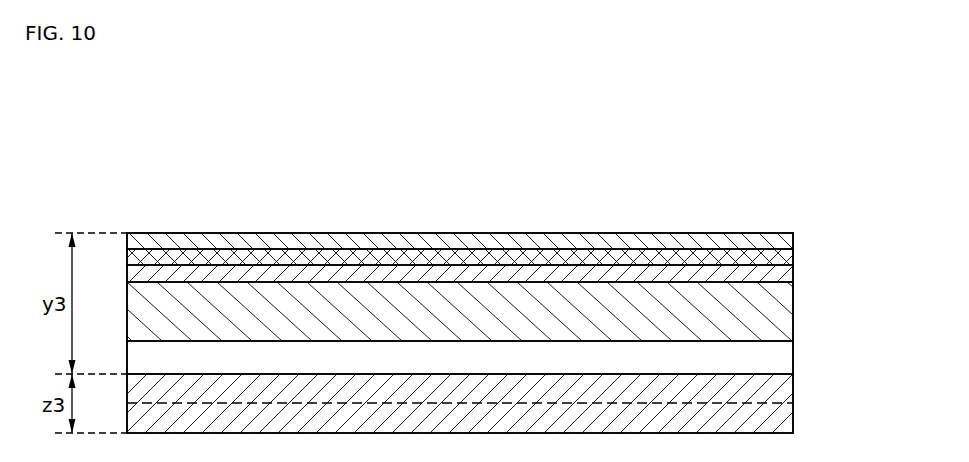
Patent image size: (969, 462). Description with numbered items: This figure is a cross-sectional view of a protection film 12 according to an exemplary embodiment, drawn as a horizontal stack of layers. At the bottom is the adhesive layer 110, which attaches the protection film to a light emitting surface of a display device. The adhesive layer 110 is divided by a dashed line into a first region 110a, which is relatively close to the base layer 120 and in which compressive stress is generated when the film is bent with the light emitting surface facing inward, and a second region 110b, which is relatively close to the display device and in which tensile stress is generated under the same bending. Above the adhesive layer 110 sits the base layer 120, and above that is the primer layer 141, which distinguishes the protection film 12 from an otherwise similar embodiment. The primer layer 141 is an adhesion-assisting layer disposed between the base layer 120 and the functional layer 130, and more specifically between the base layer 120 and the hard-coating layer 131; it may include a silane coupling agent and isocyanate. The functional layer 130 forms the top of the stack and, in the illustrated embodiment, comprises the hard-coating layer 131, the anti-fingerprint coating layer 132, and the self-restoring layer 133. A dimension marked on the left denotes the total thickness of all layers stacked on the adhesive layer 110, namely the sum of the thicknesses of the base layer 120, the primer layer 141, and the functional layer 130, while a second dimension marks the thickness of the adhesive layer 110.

The protection film 12 is at (647, 146).
The functional layer 130 is at (863, 228).
The self-restoring layer 133 is at (784, 241).
The anti-fingerprint coating layer 132 is at (784, 258).
The hard-coating layer 131 is at (784, 274).
The primer layer 141 is at (784, 312).
The base layer 120 is at (784, 358).
The adhesive layer 110 is at (876, 384).
The first region 110a is at (786, 395).
The second region 110b is at (786, 412).